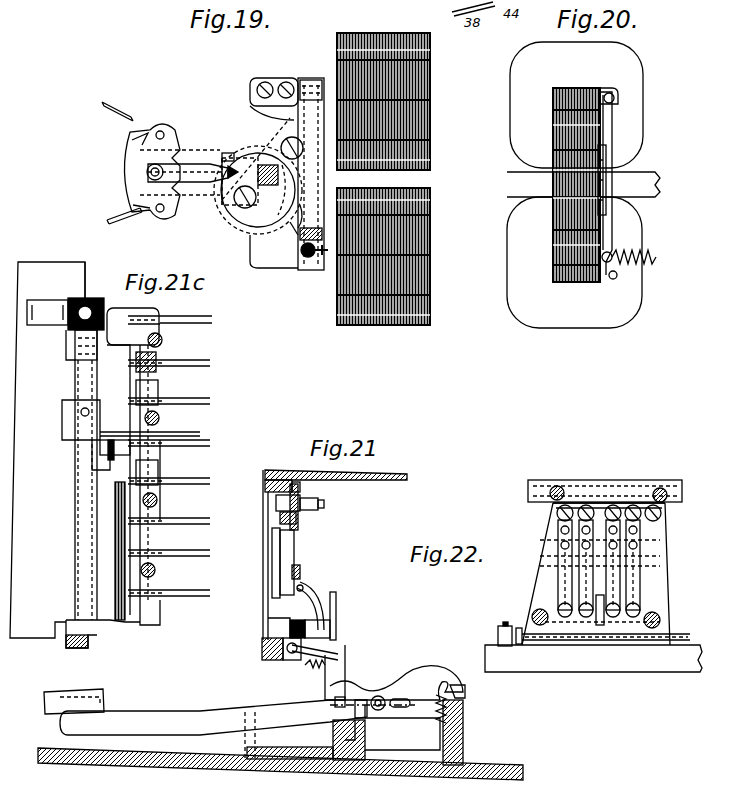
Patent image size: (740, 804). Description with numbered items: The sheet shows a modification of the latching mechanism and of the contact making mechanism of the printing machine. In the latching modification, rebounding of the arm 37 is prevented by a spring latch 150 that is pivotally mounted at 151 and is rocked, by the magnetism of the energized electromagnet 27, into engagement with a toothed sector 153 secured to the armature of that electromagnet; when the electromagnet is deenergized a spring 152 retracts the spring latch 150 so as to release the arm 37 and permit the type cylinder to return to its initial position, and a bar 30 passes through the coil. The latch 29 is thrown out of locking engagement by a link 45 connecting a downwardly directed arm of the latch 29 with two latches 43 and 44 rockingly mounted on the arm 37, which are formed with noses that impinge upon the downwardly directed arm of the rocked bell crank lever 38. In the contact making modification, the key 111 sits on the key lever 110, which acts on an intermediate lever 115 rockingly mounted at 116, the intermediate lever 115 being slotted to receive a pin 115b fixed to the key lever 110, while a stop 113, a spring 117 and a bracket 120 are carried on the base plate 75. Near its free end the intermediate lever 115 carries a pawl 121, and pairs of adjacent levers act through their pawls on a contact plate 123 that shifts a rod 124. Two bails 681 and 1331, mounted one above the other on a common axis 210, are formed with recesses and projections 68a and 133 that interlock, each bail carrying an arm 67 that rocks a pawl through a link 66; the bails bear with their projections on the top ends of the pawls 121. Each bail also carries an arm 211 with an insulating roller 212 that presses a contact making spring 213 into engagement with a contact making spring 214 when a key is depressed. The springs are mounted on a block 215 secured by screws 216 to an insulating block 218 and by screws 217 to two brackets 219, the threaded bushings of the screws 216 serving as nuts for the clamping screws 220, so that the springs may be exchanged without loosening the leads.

In FIG. 19, the electromagnet 27 is at (323, 180).
In FIG. 20, the electromagnet 27 is at (525, 208).
In FIG. 19, the latch 29 is at (228, 210).
In FIG. 19, the bar 30 is at (263, 165).
In FIG. 20, the bar 30 is at (645, 180).
In FIG. 19, the arm 37 is at (125, 181).
In FIG. 19, the bell crank lever 38 is at (124, 105).
In FIG. 19, the latch 43 is at (133, 144).
In FIG. 19, the latch 44 is at (130, 206).
In FIG. 19, the link 45 is at (190, 170).
In FIG. 19, the spring latch 150 is at (322, 195).
In FIG. 20, the spring latch 150 is at (616, 143).
In FIG. 19, the pivot 151 is at (311, 80).
In FIG. 20, the pivot 151 is at (620, 99).
In FIG. 19, the spring 152 is at (310, 262).
In FIG. 20, the spring 152 is at (656, 256).
In FIG. 19, the toothed sector 153 is at (300, 222).
In FIG. 20, the toothed sector 153 is at (608, 208).
In FIG. 21C, the link 66 is at (200, 433).
In FIG. 21C, the arm 67 is at (113, 455).
In FIG. 21C, the projections 68a is at (170, 468).
In FIG. 21C, the pawl 121 is at (222, 553).
In FIG. 21, the pawl 121 is at (343, 660).
In FIG. 21C, the rod 124 is at (168, 570).
In FIG. 21, the rod 124 is at (332, 628).
In FIG. 21C, the bail 133 is at (112, 475).
In FIG. 21C, the common axis 210 is at (80, 350).
In FIG. 21, the common axis 210 is at (292, 624).
In FIG. 22, the common axis 210 is at (504, 624).
In FIG. 21C, the lower bail 681 is at (120, 538).
In FIG. 22, the lower bail 681 is at (598, 648).
In FIG. 21C, the upper bail 1331 is at (118, 360).
In FIG. 21, the upper bail 1331 is at (338, 618).
In FIG. 22, the upper bail 1331 is at (519, 628).
In FIG. 21, the base plate 75 is at (200, 770).
In FIG. 21, the key lever 110 is at (165, 718).
In FIG. 21, the key 111 is at (95, 690).
In FIG. 21, the stop 113 is at (333, 705).
In FIG. 21, the intermediate lever 115 is at (418, 672).
In FIG. 21, the pin 115b is at (380, 696).
In FIG. 21, the pivot 116 is at (468, 692).
In FIG. 21, the spring 117 is at (432, 722).
In FIG. 21, the bracket 120 is at (332, 733).
In FIG. 21, the contact plate 123 is at (304, 653).
In FIG. 21, the arm 211 is at (312, 605).
In FIG. 22, the arm 211 is at (602, 615).
In FIG. 21, the roller 212 is at (302, 576).
In FIG. 22, the roller 212 is at (600, 595).
In FIG. 21, the contact making spring 213 is at (296, 552).
In FIG. 22, the contact making spring 213 is at (650, 560).
In FIG. 21, the contact making spring 214 is at (272, 565).
In FIG. 22, the contact making spring 214 is at (645, 585).
In FIG. 21, the block 215 is at (280, 517).
In FIG. 22, the block 215 is at (556, 514).
In FIG. 21, the screw 216 is at (276, 500).
In FIG. 22, the screw 216 is at (604, 503).
In FIG. 22, the screw 217 is at (528, 650).
In FIG. 21, the insulating block 218 is at (302, 487).
In FIG. 22, the insulating block 218 is at (605, 480).
In FIG. 22, the bracket 219 is at (656, 658).
In FIG. 21, the clamping screw 220 is at (326, 504).